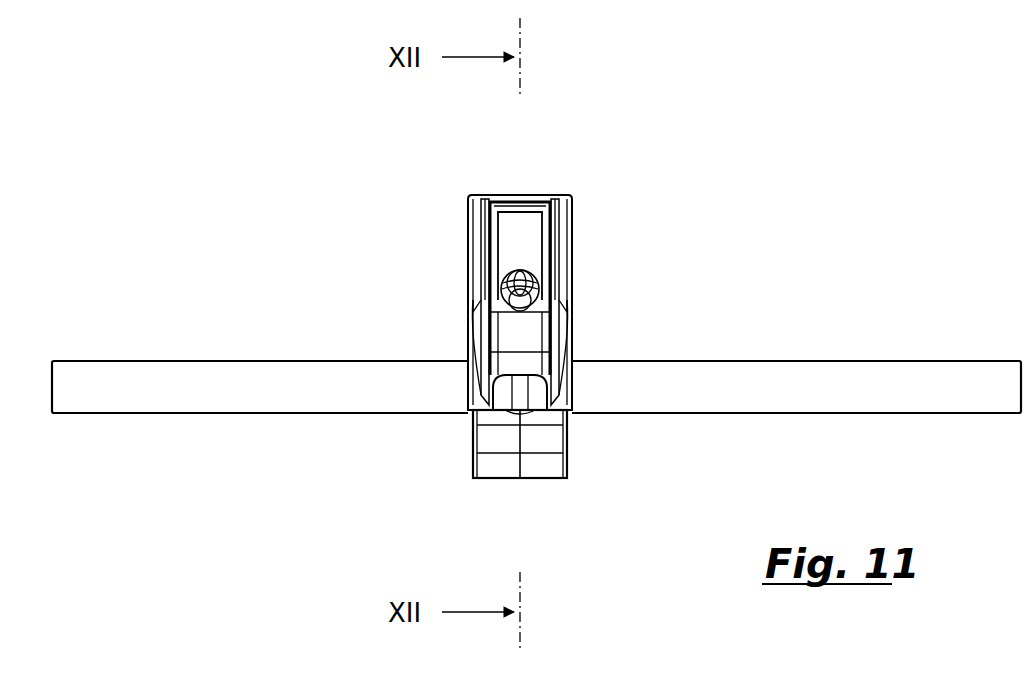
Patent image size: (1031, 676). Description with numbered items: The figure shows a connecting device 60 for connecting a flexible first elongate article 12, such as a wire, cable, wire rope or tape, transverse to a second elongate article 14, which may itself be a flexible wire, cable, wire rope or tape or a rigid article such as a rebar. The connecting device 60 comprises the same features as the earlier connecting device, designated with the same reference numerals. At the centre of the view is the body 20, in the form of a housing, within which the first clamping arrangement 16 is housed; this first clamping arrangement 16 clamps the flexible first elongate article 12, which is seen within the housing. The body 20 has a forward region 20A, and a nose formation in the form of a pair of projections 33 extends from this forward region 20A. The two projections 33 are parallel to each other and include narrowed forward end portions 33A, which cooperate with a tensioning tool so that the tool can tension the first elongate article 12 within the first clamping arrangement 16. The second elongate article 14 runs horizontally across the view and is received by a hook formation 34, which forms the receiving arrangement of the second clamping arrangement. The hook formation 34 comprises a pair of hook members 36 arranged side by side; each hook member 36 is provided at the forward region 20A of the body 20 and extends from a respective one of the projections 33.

The connecting device 60 is at (560, 146).
The second elongate article 14 is at (913, 373).
The first elongate article 12 is at (520, 300).
The first clamping arrangement 16 is at (518, 232).
The body 20 is at (468, 240).
The forward region 20A is at (520, 197).
The projections 33 is at (470, 215).
The narrowed forward end portions 33A is at (478, 257).
The hook formation 34 is at (468, 444).
The hook members 36 is at (490, 465).